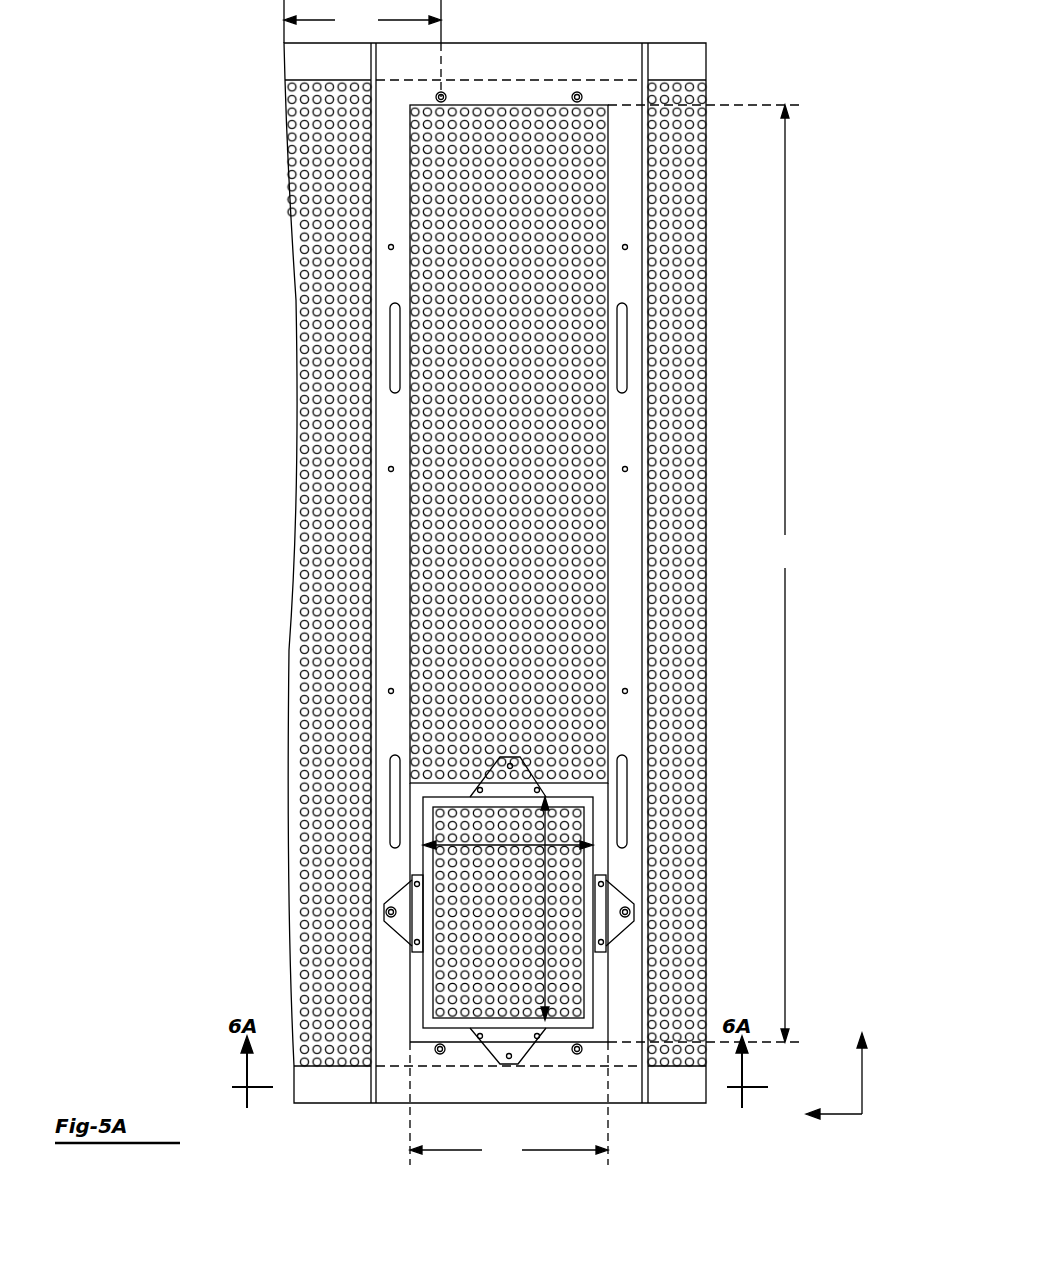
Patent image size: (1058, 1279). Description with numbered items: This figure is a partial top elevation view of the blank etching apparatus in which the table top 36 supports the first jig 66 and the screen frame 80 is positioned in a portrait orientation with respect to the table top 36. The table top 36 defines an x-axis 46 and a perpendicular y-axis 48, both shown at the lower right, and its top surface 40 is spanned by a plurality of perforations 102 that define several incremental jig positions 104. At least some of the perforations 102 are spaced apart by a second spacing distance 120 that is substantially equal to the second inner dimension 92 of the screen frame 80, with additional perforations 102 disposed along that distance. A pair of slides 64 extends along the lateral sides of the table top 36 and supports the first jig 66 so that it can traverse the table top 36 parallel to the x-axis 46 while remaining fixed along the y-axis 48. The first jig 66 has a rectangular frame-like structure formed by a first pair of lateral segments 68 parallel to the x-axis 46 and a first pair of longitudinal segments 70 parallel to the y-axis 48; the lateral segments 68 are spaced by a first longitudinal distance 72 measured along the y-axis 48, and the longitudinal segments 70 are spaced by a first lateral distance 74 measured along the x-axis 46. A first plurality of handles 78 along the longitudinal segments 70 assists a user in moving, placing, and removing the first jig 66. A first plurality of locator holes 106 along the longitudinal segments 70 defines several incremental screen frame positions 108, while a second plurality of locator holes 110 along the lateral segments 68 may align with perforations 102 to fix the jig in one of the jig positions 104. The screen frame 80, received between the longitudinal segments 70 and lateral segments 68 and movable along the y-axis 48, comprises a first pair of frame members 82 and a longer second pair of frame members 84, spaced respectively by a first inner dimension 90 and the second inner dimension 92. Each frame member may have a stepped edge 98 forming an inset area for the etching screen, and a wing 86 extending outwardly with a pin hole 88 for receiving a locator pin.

The table top 36 is at (250, 189).
The top surface 40 is at (295, 135).
The x-axis 46 is at (845, 1114).
The y-axis 48 is at (862, 1087).
The pair of slides 64 is at (665, 52).
The first jig 66 is at (488, 38).
The first pair of lateral segments 68 is at (585, 58).
The first pair of longitudinal segments 70 is at (389, 408).
The first longitudinal distance 72 is at (704, 573).
The first lateral distance 74 is at (509, 1103).
The first plurality of handles 78 is at (395, 331).
The screen frame 80 is at (400, 870).
The first pair of frame members 82 is at (575, 800).
The second pair of frame members 84 is at (415, 1003).
The wing 86 is at (477, 776).
The pin hole 88 is at (513, 762).
The first inner dimension 90 is at (545, 957).
The second inner dimension 92 is at (490, 852).
The stepped edge 98 is at (440, 840).
The plurality of perforations 102 is at (302, 223).
The incremental jig positions 104 is at (282, 88).
The first plurality of locator holes 106 is at (391, 244).
The incremental screen frame positions 108 is at (636, 254).
The second plurality of locator holes 110 is at (437, 92).
The second spacing distance 120 is at (362, 48).